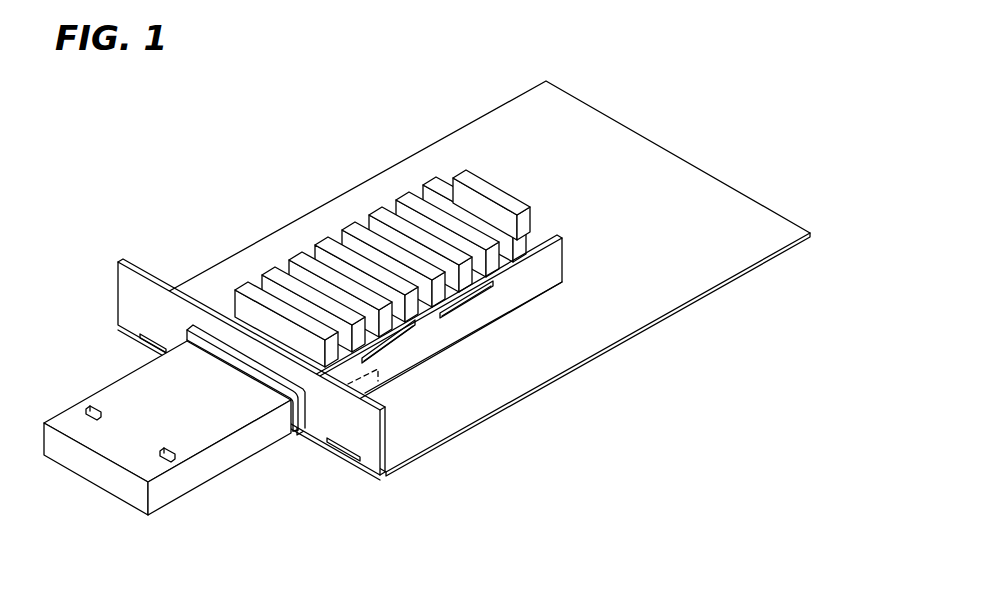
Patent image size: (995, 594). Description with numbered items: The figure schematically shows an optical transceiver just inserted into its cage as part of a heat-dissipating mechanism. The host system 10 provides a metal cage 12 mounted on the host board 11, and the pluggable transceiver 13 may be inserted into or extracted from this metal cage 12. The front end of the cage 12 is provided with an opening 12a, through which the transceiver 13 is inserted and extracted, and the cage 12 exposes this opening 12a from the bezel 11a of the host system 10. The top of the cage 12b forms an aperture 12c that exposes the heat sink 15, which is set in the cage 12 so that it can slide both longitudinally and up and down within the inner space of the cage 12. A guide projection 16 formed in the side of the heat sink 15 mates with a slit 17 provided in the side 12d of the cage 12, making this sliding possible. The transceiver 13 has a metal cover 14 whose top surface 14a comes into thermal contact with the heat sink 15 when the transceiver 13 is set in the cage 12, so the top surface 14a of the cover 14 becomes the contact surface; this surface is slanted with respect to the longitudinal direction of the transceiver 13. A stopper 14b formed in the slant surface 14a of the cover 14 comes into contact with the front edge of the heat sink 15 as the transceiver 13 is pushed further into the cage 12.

The host system 10 is at (294, 190).
The host board 11 is at (594, 131).
The bezel 11a is at (137, 294).
The metal cage 12 is at (471, 309).
The opening 12a is at (304, 433).
The top of the cage 12b is at (528, 223).
The aperture 12c is at (558, 237).
The side of the cage 12d is at (517, 296).
The pluggable transceiver 13 is at (201, 497).
The metal cover 14 is at (163, 446).
The top surface 14a is at (206, 393).
The stopper 14b is at (87, 410).
The heat sink 15 is at (440, 182).
The guide projection 16 is at (396, 362).
The slit 17 is at (437, 318).